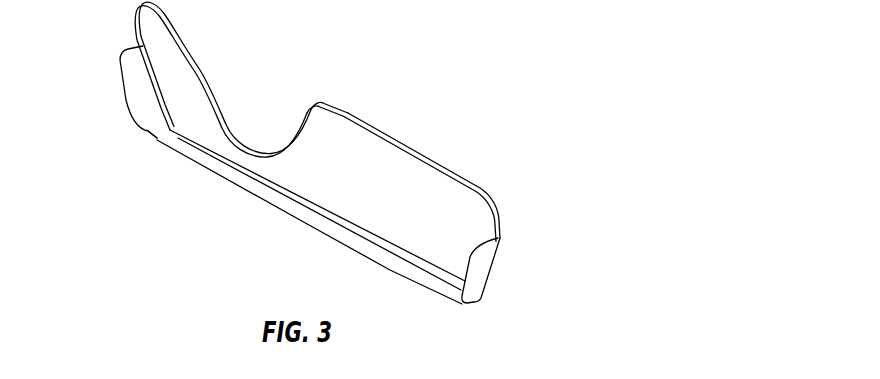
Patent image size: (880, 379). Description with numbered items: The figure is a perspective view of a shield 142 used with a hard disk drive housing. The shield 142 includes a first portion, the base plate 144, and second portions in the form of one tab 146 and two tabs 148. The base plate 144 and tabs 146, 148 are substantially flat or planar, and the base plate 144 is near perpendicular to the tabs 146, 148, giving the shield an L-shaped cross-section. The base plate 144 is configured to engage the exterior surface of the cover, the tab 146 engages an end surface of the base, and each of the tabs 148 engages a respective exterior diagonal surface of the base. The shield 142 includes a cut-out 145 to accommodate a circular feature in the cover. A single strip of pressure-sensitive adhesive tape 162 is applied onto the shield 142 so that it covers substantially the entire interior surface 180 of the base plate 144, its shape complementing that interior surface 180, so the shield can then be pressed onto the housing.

The shield 142 is at (432, 155).
The base plate 144 is at (377, 127).
The cut-out 145 is at (229, 108).
The tab 146 is at (262, 191).
The tabs 148 is at (122, 84).
The pressure-sensitive adhesive tape 162 is at (323, 137).
The interior surface 180 is at (192, 151).